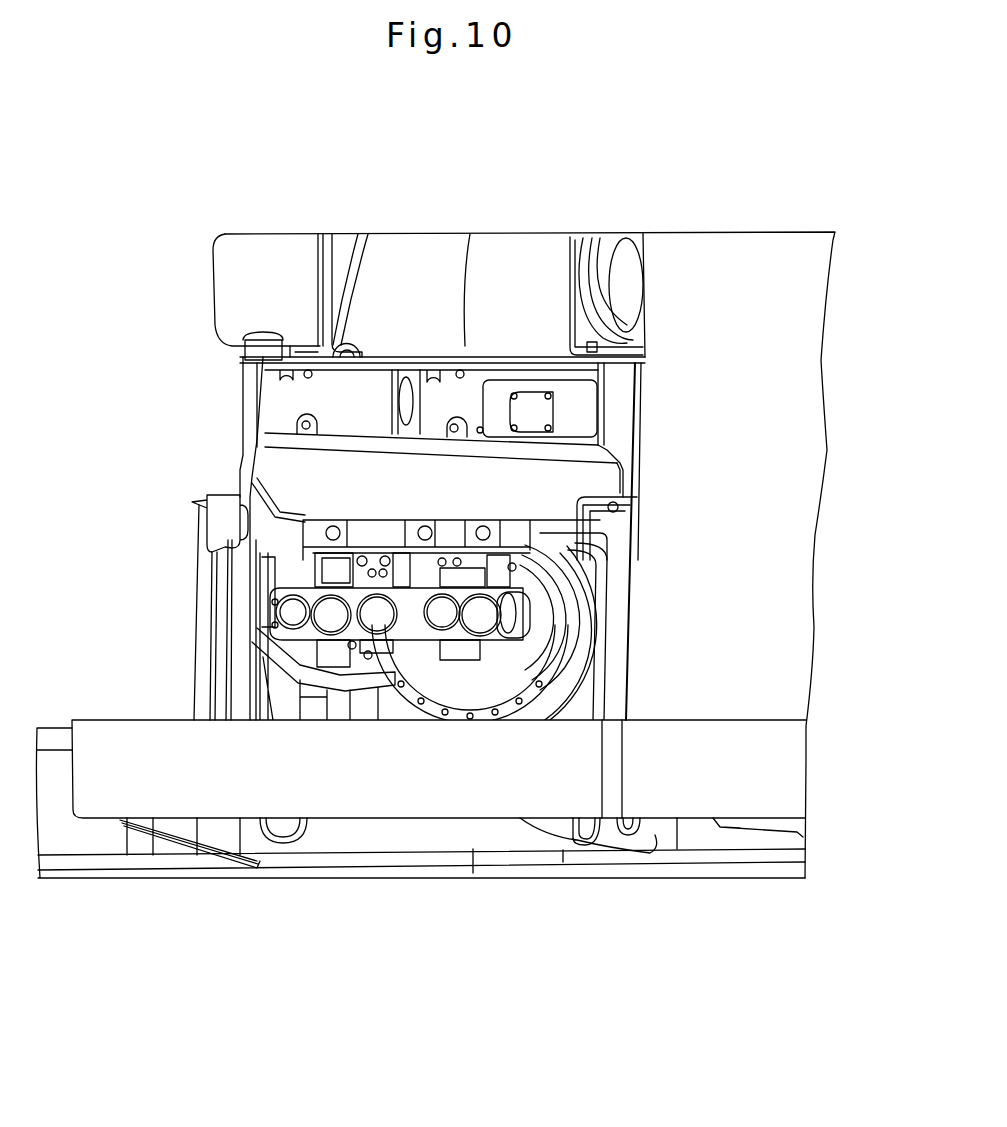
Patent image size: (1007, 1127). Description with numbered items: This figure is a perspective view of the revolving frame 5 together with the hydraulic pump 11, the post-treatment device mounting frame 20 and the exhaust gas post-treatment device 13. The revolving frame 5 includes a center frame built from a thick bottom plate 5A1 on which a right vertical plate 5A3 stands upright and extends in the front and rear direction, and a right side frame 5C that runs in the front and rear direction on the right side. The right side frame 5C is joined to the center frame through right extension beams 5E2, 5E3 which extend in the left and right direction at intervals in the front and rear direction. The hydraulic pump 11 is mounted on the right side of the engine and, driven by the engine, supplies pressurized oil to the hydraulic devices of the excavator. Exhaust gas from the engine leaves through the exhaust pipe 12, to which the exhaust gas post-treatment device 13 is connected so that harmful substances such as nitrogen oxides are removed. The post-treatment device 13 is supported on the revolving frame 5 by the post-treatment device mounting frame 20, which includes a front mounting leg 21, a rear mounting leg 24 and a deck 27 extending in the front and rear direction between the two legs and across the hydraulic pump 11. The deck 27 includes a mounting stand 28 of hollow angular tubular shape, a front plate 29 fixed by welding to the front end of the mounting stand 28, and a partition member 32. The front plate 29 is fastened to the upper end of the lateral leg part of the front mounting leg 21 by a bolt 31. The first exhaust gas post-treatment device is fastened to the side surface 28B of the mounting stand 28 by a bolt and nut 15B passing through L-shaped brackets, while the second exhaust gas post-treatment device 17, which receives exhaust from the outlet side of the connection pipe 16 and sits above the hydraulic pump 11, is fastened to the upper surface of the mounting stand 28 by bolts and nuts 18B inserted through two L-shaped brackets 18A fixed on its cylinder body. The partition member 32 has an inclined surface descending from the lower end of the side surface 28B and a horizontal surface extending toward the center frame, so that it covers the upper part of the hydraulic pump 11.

The revolving frame 5 is at (613, 878).
The thick bottom plate 5A1 is at (548, 858).
The right vertical plate 5A3 is at (345, 882).
The right side frame 5C is at (435, 778).
The right extension beam 5E2 is at (657, 830).
The right extension beam 5E3 is at (214, 884).
The hydraulic pump 11 is at (330, 622).
The exhaust pipe 12 is at (580, 412).
The exhaust gas post-treatment device 13 is at (236, 226).
The bolt and nut 15B is at (290, 385).
The connection pipe 16 is at (637, 268).
The second exhaust gas post-treatment device 17 is at (512, 260).
The bracket 18A is at (349, 232).
The bolt and nut 18B is at (300, 343).
The post-treatment device mounting frame 20 is at (240, 403).
The front mounting leg 21 is at (617, 647).
The rear mounting leg 24 is at (205, 593).
The deck 27 is at (466, 352).
The mounting stand 28 is at (413, 372).
The side surface 28B is at (290, 410).
The front plate 29 is at (623, 377).
The bolt 31 is at (620, 517).
The partition member 32 is at (325, 490).